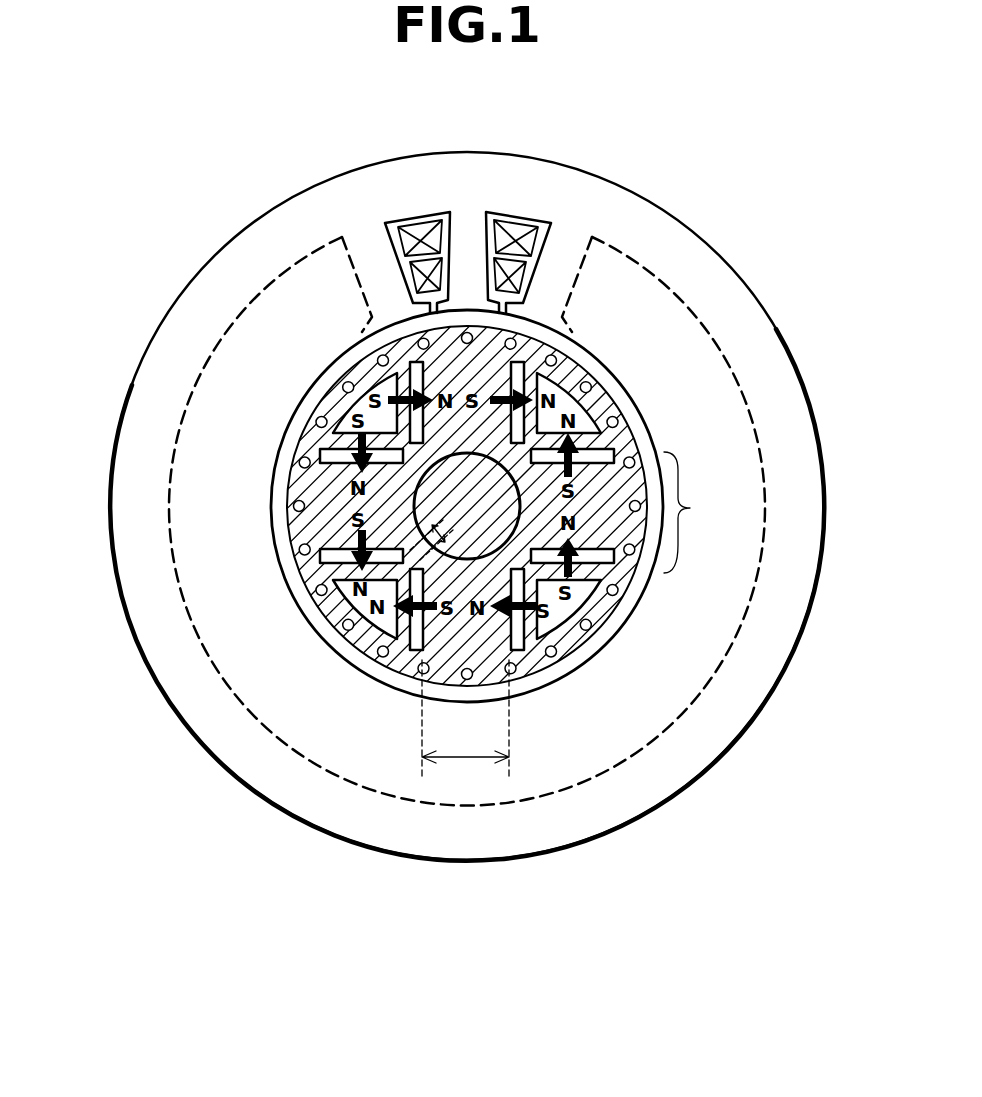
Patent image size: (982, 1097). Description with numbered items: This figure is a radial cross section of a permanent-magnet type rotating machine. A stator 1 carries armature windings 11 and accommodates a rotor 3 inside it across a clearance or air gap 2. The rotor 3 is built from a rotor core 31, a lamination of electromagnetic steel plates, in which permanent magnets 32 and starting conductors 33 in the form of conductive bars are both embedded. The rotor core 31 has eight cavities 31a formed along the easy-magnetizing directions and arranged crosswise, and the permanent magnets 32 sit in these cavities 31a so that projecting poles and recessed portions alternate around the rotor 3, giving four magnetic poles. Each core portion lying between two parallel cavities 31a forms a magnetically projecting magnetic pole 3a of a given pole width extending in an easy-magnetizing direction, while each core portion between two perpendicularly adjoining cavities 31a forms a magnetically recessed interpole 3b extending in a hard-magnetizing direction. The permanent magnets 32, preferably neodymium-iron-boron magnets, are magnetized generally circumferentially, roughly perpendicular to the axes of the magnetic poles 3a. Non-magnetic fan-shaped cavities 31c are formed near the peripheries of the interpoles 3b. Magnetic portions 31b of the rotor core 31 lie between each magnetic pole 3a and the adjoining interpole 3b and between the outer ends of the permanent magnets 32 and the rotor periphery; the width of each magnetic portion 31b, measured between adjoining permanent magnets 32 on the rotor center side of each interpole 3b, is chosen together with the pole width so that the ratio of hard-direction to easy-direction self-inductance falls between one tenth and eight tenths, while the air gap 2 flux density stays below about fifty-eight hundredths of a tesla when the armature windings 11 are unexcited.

The stator 1 is at (268, 197).
The clearance (air gap) 2 is at (613, 392).
The rotor 3 is at (349, 353).
The magnetic pole 3a is at (700, 512).
The interpole 3b is at (667, 567).
The armature winding 11 is at (412, 228).
The rotor core 31 is at (307, 518).
The cavity 31a is at (335, 556).
The magnetic portion 31b is at (522, 358).
The fan-shaped cavity 31c is at (593, 585).
The permanent magnet 32 is at (333, 580).
The starting conductor (conductive bar) 33 is at (435, 675).